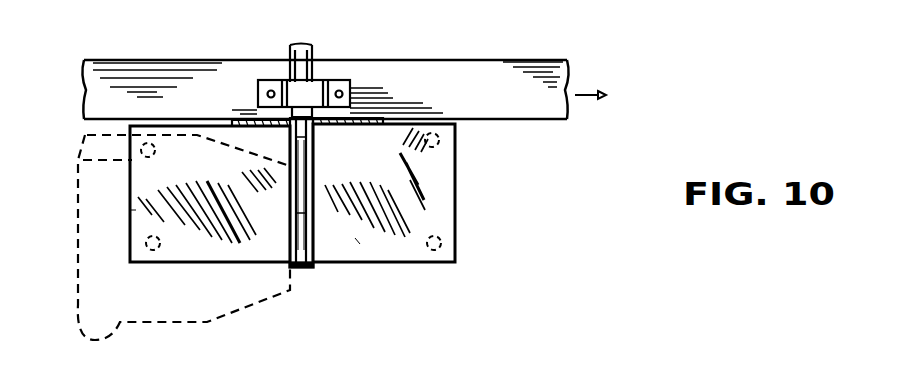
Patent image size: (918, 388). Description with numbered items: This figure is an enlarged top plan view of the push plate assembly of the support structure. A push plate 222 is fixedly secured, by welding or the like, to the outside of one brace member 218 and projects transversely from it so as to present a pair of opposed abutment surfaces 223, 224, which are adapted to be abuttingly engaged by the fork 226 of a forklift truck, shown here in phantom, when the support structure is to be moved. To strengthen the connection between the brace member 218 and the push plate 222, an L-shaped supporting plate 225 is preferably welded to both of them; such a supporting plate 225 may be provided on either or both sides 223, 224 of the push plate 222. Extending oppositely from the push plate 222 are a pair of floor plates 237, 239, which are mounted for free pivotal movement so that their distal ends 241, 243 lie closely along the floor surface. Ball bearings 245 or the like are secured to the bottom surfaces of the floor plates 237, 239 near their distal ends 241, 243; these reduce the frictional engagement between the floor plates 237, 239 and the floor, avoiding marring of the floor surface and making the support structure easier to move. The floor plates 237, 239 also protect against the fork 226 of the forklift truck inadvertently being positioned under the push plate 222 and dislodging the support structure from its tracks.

The brace member 218 is at (478, 82).
The push plate 222 is at (303, 268).
The abutment surface 223 is at (290, 227).
The abutment surface 224 is at (357, 240).
The L-shaped supporting plate 225 is at (263, 135).
The fork 226 is at (118, 316).
The floor plate 237 is at (140, 172).
The floor plate 239 is at (437, 213).
The distal end 241 is at (136, 212).
The distal end 243 is at (457, 195).
The ball bearings 245 is at (87, 157).